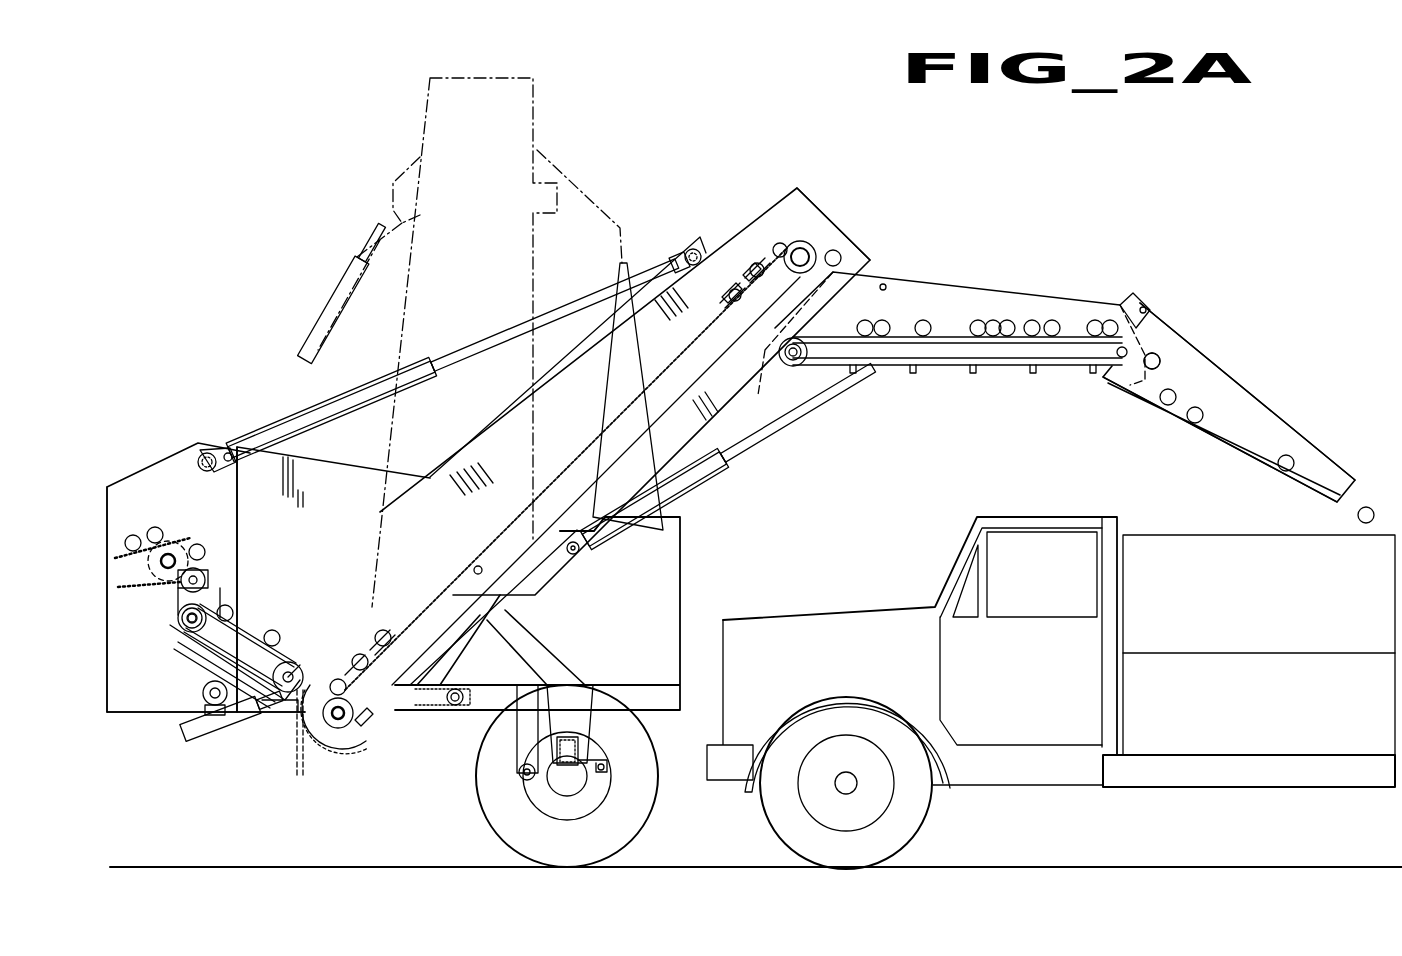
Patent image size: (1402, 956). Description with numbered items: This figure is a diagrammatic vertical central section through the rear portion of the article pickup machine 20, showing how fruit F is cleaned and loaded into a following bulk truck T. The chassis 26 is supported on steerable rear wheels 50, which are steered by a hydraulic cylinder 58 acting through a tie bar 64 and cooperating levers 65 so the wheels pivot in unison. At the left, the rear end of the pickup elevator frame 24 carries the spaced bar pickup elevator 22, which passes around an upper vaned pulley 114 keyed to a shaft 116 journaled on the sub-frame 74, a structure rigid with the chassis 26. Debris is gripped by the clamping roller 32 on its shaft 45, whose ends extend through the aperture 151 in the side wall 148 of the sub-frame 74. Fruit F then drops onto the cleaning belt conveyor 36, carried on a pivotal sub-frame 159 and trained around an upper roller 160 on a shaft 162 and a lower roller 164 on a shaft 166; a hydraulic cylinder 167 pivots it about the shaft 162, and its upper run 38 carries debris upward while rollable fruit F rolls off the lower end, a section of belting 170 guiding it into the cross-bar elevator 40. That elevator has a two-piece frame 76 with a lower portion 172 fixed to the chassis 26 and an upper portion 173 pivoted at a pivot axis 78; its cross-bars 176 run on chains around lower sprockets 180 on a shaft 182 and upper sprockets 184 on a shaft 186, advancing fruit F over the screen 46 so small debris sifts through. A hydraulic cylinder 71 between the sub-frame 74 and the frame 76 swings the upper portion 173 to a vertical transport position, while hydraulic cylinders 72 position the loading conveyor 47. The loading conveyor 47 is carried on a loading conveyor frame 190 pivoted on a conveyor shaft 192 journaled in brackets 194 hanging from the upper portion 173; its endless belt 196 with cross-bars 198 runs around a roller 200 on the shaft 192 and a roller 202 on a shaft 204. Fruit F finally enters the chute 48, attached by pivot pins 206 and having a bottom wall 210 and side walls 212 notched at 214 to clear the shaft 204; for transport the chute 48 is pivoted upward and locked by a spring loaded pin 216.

The article pickup machine 20 is at (665, 126).
The spaced bar pickup elevator 22 is at (127, 526).
The pickup elevator frame 24 is at (151, 447).
The chassis 26 is at (634, 690).
The clamping roller 32 is at (200, 572).
The cleaning belt conveyor 36 is at (252, 611).
The upper run 38 is at (278, 645).
The cross-bar elevator 40 is at (425, 130).
The shaft 45 is at (206, 573).
The screen 46 is at (410, 625).
The loading conveyor 47 is at (968, 265).
The chute 48 is at (1292, 450).
The steerable rear wheels 50 is at (498, 832).
The hydraulic cylinder 58 is at (520, 787).
The tie bar 64 is at (608, 766).
The cooperating levers 65 is at (592, 738).
The hydraulic cylinder 71 is at (340, 320).
The hydraulic cylinders 72 is at (700, 470).
The sub-frame 74 is at (237, 497).
The two-piece frame 76 is at (535, 112).
The pivot axis 78 is at (478, 565).
The upper vaned pulley 114 is at (138, 583).
The shaft 116 is at (170, 552).
The side wall 148 is at (137, 705).
The aperture 151 is at (205, 590).
The pivotal sub-frame 159 is at (190, 640).
The upper roller 160 is at (185, 620).
The shaft 162 is at (185, 628).
The lower roller 164 is at (305, 672).
The shaft 166 is at (280, 705).
The hydraulic cylinder 167 is at (200, 745).
The section of belting 170 is at (297, 755).
The lower portion 172 is at (462, 628).
The upper portion 173 is at (558, 575).
The cross-bars 176 is at (780, 262).
The lower sprockets 180 is at (352, 750).
The shaft 182 is at (333, 725).
The upper sprockets 184 is at (812, 215).
The shaft 186 is at (808, 248).
The loading conveyor frame 190 is at (1000, 305).
The conveyor shaft 192 is at (796, 350).
The brackets 194 is at (772, 378).
The endless belt 196 is at (938, 332).
The cross-bars 198 is at (1083, 330).
The roller 200 is at (798, 360).
The roller 202 is at (1125, 362).
The shaft 204 is at (1115, 365).
The pivot pins 206 is at (1148, 309).
The bottom wall 210 is at (1250, 455).
The side walls 212 is at (1262, 435).
The notch 214 is at (1125, 300).
The spring loaded pin 216 is at (886, 285).
The fruit F is at (840, 256).
The truck T is at (1165, 555).